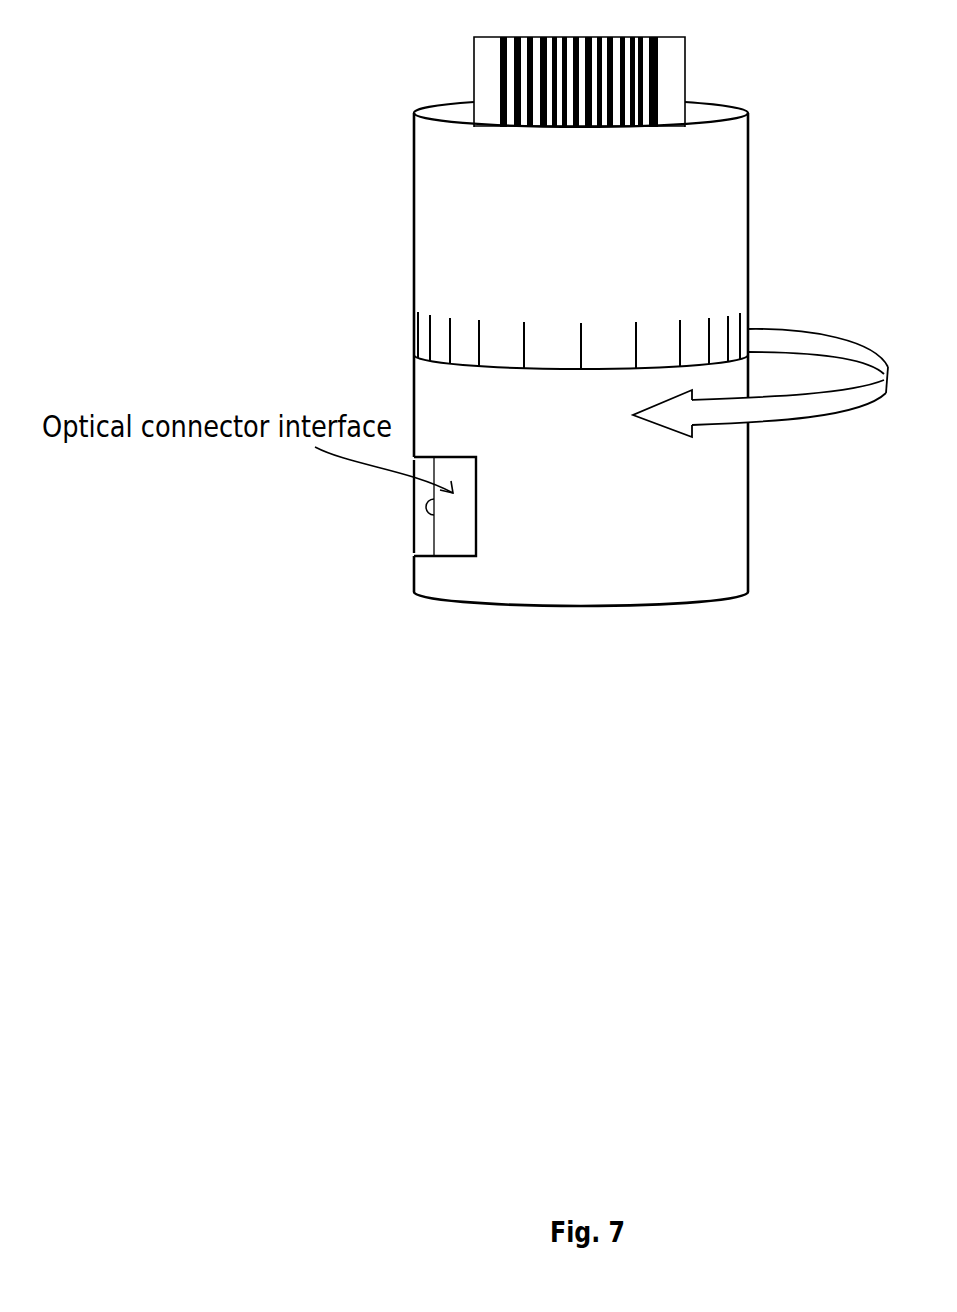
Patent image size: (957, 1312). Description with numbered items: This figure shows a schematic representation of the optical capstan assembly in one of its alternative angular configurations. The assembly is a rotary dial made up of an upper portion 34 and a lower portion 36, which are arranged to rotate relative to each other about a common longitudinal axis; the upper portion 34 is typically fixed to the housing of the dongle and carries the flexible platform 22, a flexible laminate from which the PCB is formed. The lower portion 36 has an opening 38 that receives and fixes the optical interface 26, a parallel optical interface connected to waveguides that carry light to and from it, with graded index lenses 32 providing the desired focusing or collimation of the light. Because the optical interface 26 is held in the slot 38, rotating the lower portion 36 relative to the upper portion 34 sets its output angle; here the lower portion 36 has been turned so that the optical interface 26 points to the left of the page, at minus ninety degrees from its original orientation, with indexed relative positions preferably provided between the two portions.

The flexible platform 22 is at (673, 83).
The upper portion 34 is at (727, 185).
The lower portion 36 is at (735, 566).
The optical interface unit 26 is at (457, 536).
The opening 38 is at (412, 487).
The graded index lenses 32 is at (423, 503).